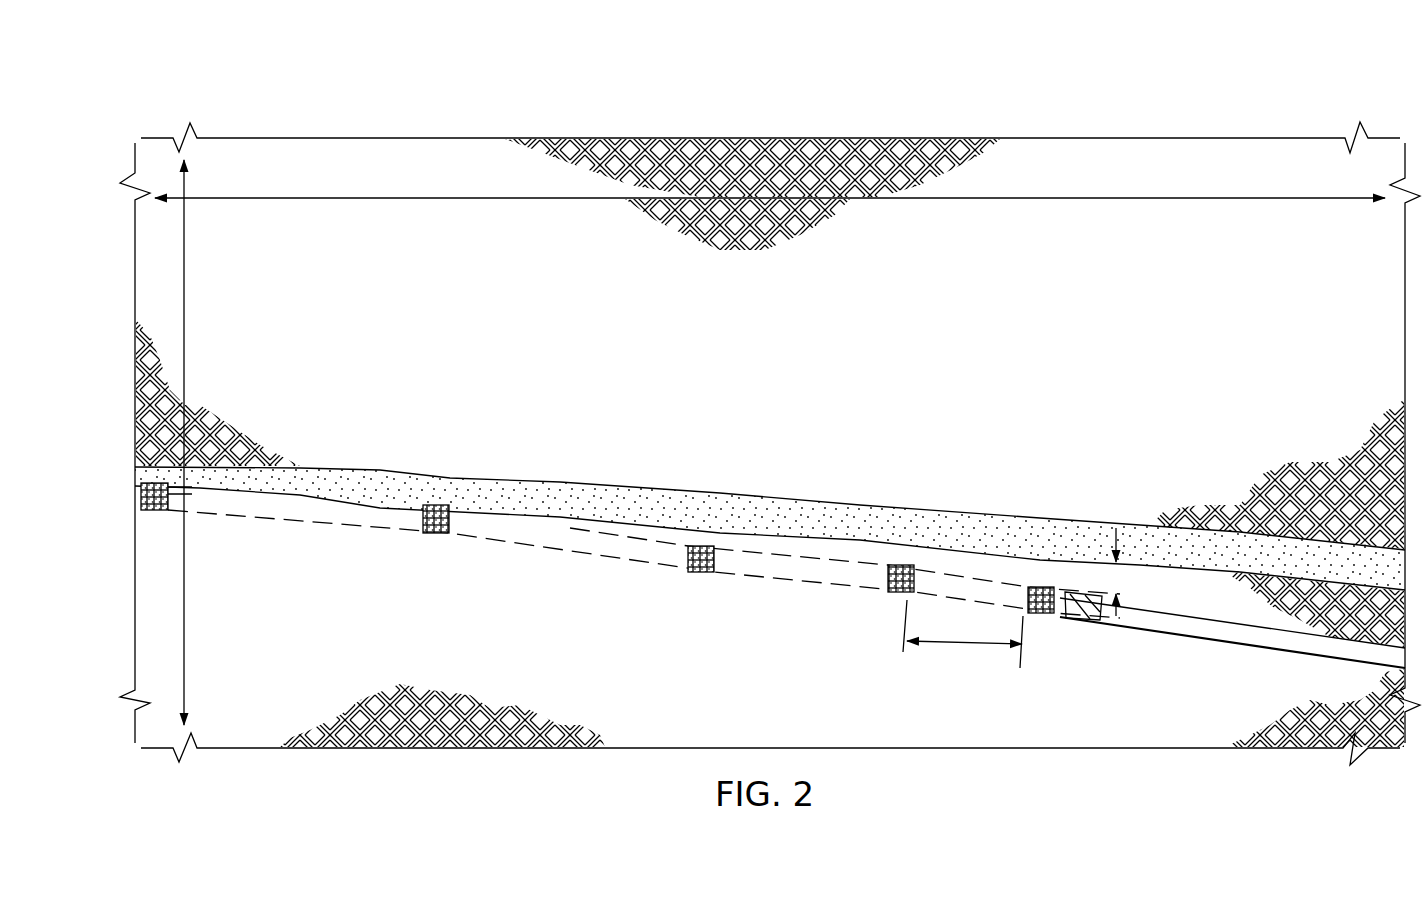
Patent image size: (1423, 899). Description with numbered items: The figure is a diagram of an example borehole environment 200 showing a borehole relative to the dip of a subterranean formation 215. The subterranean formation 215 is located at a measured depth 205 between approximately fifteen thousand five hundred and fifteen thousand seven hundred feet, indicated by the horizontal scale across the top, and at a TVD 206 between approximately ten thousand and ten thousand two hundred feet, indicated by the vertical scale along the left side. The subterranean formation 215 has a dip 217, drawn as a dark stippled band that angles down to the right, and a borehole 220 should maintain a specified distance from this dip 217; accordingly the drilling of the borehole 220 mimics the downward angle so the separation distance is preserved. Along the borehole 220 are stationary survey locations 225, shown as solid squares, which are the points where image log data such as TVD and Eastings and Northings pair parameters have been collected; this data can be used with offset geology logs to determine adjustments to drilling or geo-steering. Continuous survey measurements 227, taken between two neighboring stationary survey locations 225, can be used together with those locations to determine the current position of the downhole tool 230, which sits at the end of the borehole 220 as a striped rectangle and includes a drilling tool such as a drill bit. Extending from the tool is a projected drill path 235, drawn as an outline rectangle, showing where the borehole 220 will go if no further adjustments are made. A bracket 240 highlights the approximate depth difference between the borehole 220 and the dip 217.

The borehole environment 200 is at (458, 73).
The measured depth 205 is at (1081, 200).
The TVD 206 is at (186, 597).
The subterranean formation 215 is at (784, 336).
The dip 217 is at (553, 480).
The borehole 220 is at (552, 549).
The stationary survey locations 225 is at (143, 512).
The continuous survey measurements 227 is at (965, 645).
The downhole tool 230 is at (1088, 622).
The projected drill path 235 is at (1228, 646).
The bracket 240 is at (1116, 528).